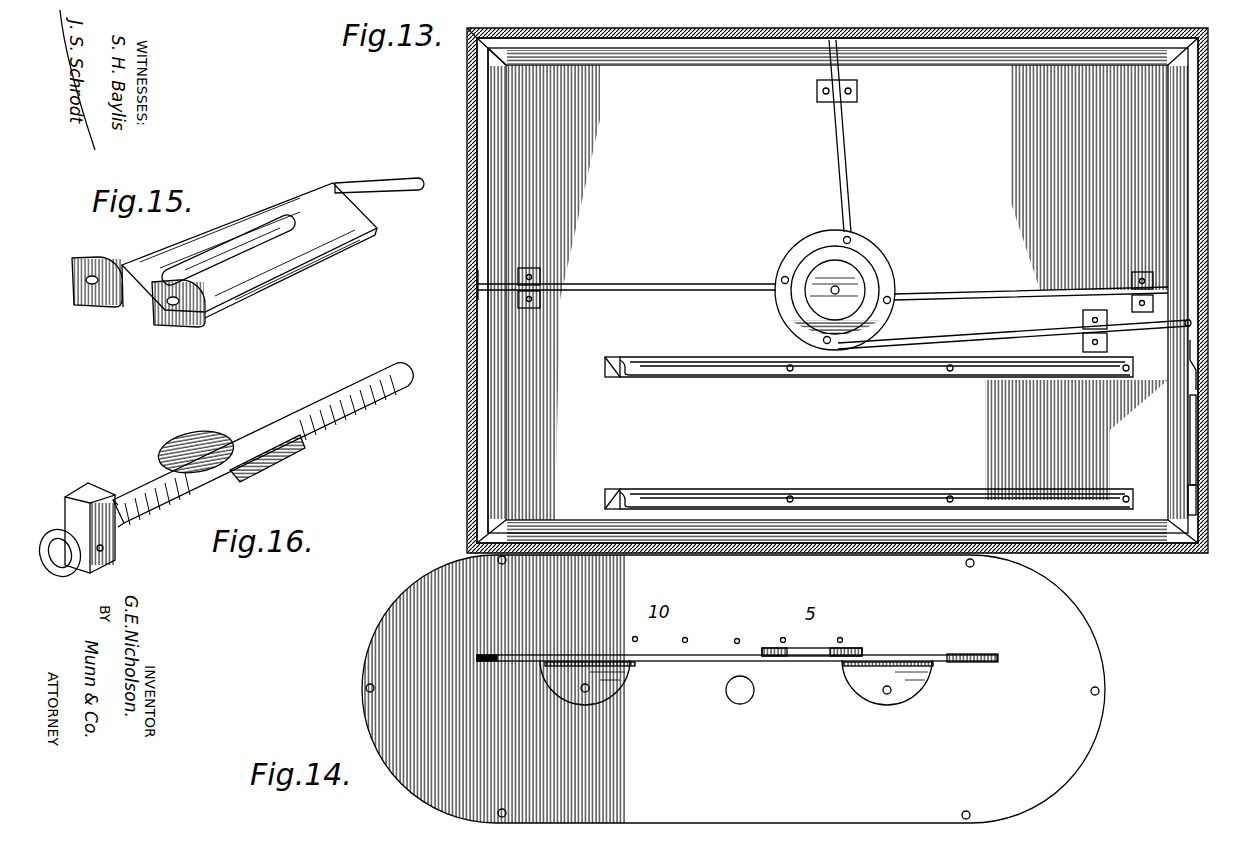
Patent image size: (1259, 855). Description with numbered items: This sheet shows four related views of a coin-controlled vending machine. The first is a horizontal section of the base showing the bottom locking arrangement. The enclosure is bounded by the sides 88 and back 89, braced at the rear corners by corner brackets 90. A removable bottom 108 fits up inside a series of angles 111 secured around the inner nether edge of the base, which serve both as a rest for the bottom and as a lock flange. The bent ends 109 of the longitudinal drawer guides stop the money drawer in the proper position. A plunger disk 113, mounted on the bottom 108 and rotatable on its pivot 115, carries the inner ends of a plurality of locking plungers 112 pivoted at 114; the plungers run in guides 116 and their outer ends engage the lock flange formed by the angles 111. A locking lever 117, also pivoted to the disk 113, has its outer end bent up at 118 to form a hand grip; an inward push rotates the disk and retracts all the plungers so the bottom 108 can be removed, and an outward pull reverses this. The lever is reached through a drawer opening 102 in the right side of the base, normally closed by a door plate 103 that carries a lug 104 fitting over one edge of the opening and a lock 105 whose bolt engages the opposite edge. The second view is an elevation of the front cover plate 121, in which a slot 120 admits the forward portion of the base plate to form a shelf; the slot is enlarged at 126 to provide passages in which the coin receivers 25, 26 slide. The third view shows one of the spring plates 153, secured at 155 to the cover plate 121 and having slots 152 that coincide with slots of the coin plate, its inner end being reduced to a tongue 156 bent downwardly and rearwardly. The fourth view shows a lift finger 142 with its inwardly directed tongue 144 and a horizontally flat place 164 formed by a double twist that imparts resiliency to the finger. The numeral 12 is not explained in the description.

In FIG. 13, the sides 88 is at (470, 275).
In FIG. 13, the back 89 is at (508, 50).
In FIG. 13, the corner brackets 90 is at (467, 47).
In FIG. 13, the drawer opening 102 is at (1203, 356).
In FIG. 13, the door plate 103 is at (1208, 420).
In FIG. 13, the lug 104 is at (1205, 380).
In FIG. 13, the lock 105 is at (1208, 498).
In FIG. 13, the removable bottom 108 is at (543, 468).
In FIG. 13, the bent ends of guides 109 is at (618, 378).
In FIG. 13, the angles 111 is at (498, 193).
In FIG. 13, the locking plungers 112 is at (853, 180).
In FIG. 13, the plunger disk 113 is at (872, 255).
In FIG. 13, the pivots 114 is at (842, 240).
In FIG. 13, the pivot 115 is at (833, 292).
In FIG. 13, the guides 116 is at (857, 100).
In FIG. 13, the locking lever 117 is at (950, 342).
In FIG. 13, the hand grip 118 is at (1192, 323).
In FIG. 14, the slot 120 is at (985, 656).
In FIG. 14, the front cover plate 121 is at (1078, 745).
In FIG. 14, the bearing 12 is at (912, 656).
In FIG. 14, the coin receiver 25 is at (653, 662).
In FIG. 14, the coin receiver 26 is at (812, 662).
In FIG. 14, the enlargements of slot 126 is at (700, 650).
In FIG. 16, the lift finger 142 is at (368, 386).
In FIG. 16, the tongue 144 is at (197, 436).
In FIG. 16, the horizontally flat places 164 is at (285, 460).
In FIG. 15, the slots 152 is at (225, 260).
In FIG. 15, the spring plate 153 is at (283, 270).
In FIG. 15, the securing points 155 is at (95, 262).
In FIG. 15, the tongue 156 is at (394, 184).